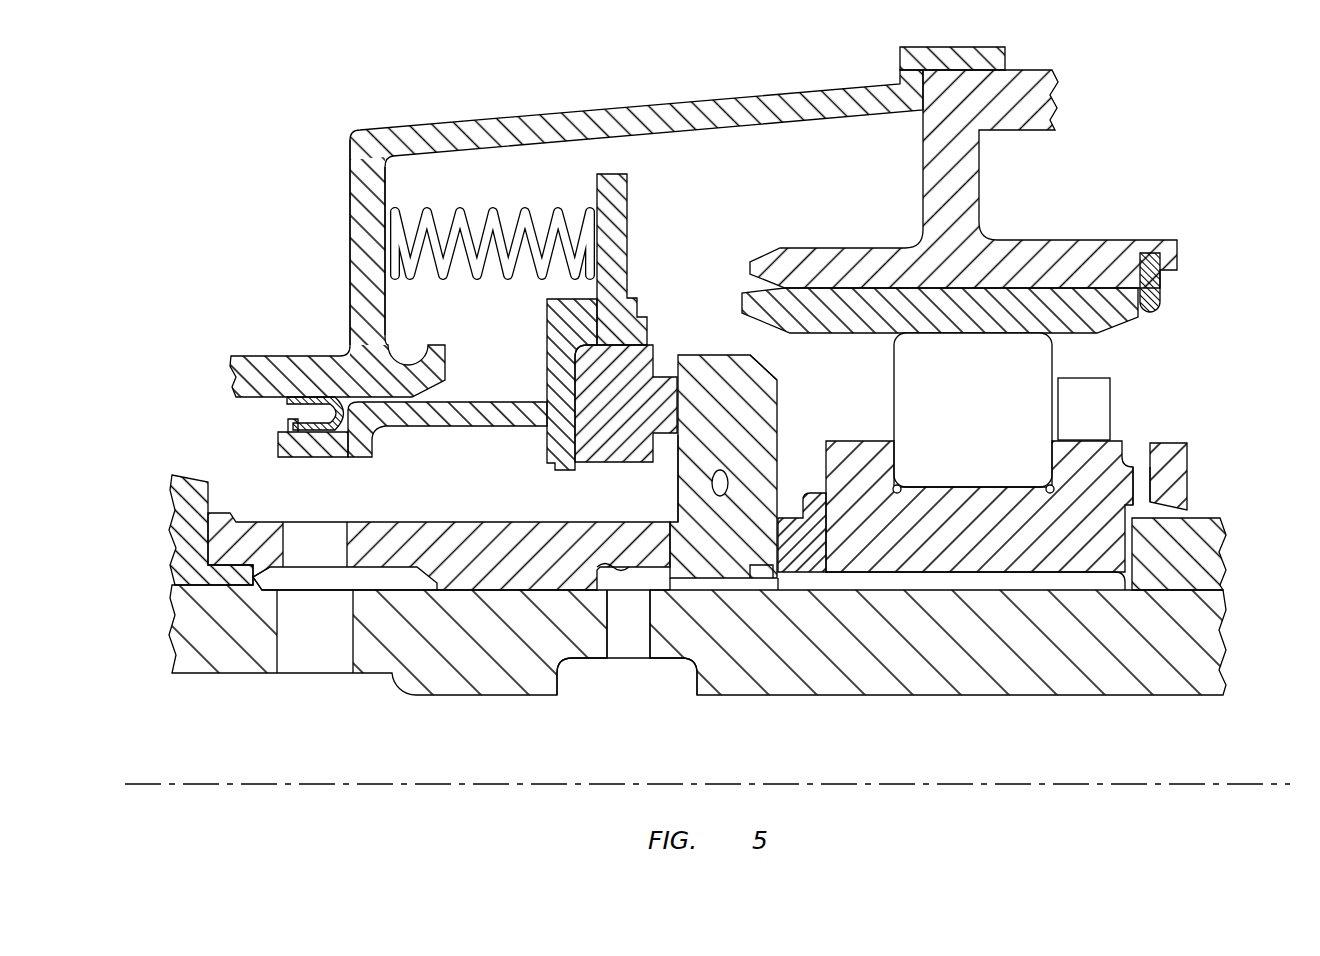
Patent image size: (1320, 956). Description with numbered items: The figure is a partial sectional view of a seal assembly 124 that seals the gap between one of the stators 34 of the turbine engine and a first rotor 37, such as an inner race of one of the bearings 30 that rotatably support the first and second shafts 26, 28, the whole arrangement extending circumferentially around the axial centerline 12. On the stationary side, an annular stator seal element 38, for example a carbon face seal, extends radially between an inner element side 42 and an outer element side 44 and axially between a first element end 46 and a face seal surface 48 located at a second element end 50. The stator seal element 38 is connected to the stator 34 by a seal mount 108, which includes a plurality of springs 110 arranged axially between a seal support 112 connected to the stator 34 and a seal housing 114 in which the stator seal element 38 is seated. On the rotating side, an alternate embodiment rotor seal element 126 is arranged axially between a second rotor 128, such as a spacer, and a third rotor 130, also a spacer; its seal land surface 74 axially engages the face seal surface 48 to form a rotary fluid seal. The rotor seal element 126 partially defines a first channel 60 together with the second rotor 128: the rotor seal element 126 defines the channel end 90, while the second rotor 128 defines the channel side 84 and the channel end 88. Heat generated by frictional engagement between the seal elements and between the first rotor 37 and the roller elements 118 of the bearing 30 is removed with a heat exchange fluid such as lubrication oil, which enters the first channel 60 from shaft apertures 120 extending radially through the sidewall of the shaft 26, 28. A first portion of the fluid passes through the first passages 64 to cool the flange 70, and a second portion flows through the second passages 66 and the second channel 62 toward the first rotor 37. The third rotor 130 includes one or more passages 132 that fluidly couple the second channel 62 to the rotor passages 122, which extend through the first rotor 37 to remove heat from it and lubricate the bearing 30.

The axial centerline 12 is at (255, 783).
The first shaft 26 is at (712, 673).
The second shaft 28 is at (712, 673).
The bearing 30 is at (1045, 454).
The stator 34 is at (1060, 52).
The first rotor 37 is at (1187, 474).
The stator seal element 38 is at (652, 330).
The inner element side 42 is at (600, 477).
The outer element side 44 is at (597, 340).
The first element end 46 is at (573, 400).
The face seal surface 48 is at (727, 427).
The second element end 50 is at (727, 427).
The first channel 60 is at (600, 585).
The second channel 62 is at (758, 582).
The first passages 64 is at (730, 485).
The second passages 66 is at (697, 585).
The flange 70 is at (730, 352).
The seal land surface 74 is at (672, 460).
The channel side 84 is at (613, 567).
The channel end 88 is at (560, 592).
The channel end 90 is at (662, 585).
The seal mount 108 is at (576, 231).
The springs 110 is at (492, 210).
The seal support 112 is at (350, 212).
The seal housing 114 is at (630, 198).
The roller elements 118 is at (1060, 366).
The shaft apertures 120 is at (620, 648).
The rotor passages 122 is at (1140, 475).
The seal assembly 124 is at (207, 160).
The rotor seal element 126 is at (780, 388).
The second rotor 128 is at (463, 520).
The third rotor 130 is at (813, 492).
The passages 132 is at (807, 582).